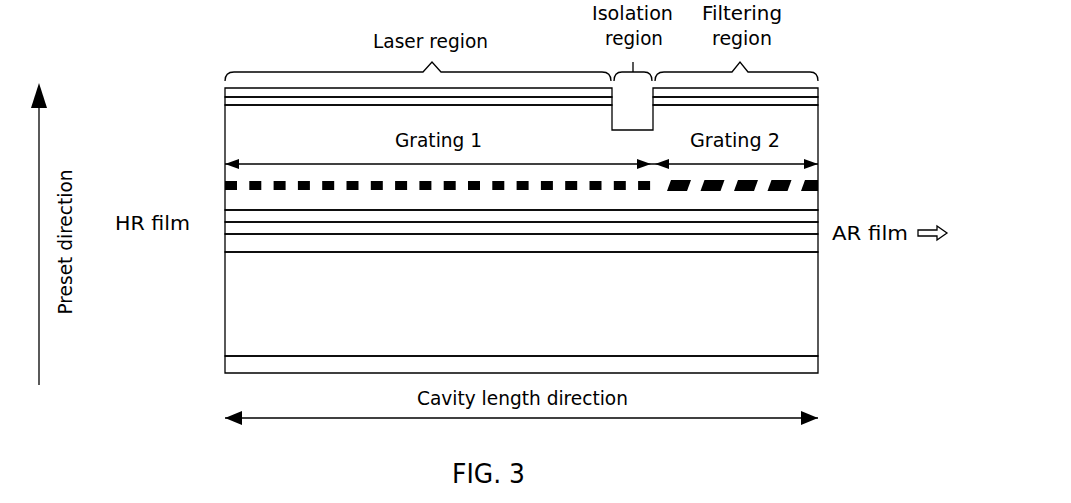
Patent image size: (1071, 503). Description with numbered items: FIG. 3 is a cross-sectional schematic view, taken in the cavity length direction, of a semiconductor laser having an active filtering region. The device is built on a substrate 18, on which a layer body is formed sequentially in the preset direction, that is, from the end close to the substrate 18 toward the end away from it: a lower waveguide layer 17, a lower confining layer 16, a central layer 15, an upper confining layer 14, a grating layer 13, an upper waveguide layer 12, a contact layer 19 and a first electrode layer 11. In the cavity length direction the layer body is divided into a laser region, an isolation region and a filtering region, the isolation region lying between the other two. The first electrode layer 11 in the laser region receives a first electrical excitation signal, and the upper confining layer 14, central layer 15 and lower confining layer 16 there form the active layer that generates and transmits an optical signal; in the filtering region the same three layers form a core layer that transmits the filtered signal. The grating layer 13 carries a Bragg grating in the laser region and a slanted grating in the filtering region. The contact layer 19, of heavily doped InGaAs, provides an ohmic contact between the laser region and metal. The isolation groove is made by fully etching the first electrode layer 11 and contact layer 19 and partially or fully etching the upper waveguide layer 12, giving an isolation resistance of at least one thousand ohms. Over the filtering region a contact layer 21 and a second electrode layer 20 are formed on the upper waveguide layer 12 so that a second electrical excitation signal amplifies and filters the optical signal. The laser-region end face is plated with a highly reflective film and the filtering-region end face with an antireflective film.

The first electrode layer 11 is at (225, 93).
The contact layer 19 is at (233, 103).
The upper waveguide layer 12 is at (228, 140).
The grating layer 13 is at (225, 185).
The upper confining layer 14 is at (230, 217).
The central layer 15 is at (233, 232).
The lower confining layer 16 is at (235, 243).
The lower waveguide layer 17 is at (237, 302).
The substrate 18 is at (237, 368).
The second electrode layer 20 is at (817, 93).
The contact layer 21 is at (817, 102).